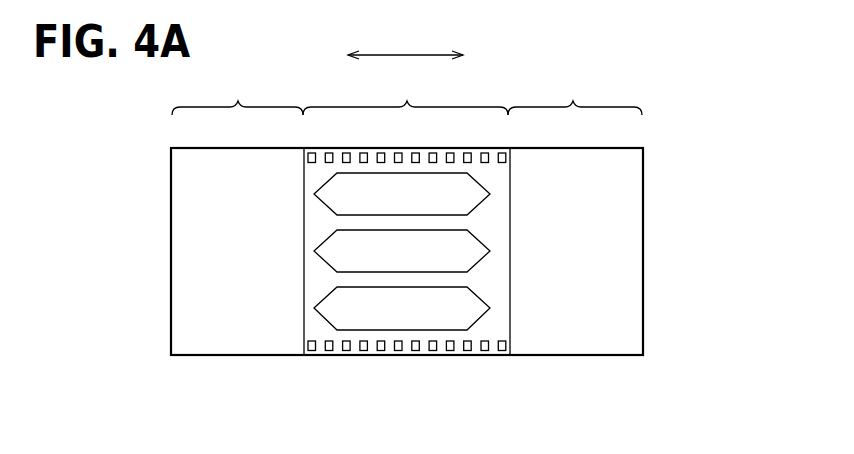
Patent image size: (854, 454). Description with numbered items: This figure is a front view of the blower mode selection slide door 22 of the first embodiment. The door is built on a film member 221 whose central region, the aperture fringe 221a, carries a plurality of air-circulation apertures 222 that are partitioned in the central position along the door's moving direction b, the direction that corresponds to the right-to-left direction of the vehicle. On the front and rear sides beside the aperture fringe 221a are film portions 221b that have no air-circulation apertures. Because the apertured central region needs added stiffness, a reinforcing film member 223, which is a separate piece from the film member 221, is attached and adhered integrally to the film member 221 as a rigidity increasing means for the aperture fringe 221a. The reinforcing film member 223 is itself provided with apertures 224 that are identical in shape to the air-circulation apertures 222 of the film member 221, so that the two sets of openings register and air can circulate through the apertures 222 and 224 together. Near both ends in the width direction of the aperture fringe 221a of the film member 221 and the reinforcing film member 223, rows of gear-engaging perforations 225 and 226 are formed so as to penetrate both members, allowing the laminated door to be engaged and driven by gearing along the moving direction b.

The blower mode selection slide door 22 is at (453, 251).
The film member 221 is at (649, 317).
The aperture fringe 221a is at (405, 96).
The film portions without air-circulation apertures 221b is at (407, 96).
The air-circulation apertures 222 is at (462, 195).
The apertures 224 is at (544, 222).
The reinforcing film member 223 is at (317, 283).
The gear-engaging perforations 225 is at (310, 163).
The gear-engaging perforations 226 is at (467, 352).
The moving direction b is at (405, 55).